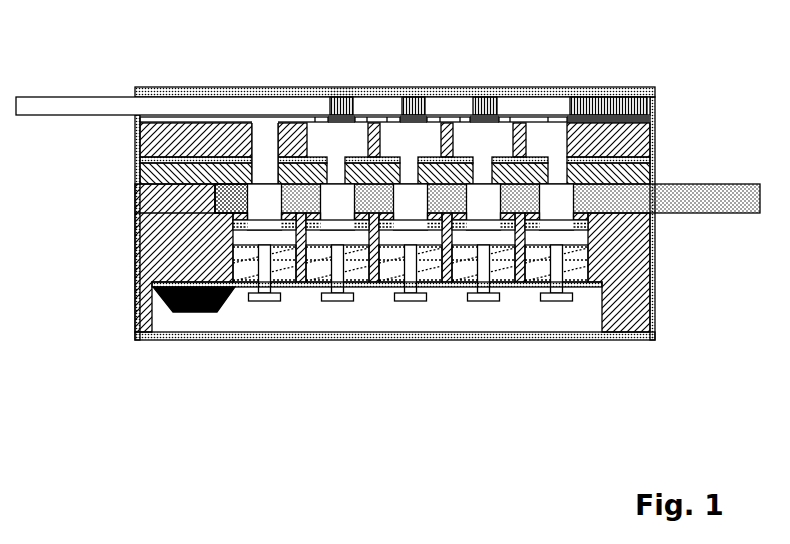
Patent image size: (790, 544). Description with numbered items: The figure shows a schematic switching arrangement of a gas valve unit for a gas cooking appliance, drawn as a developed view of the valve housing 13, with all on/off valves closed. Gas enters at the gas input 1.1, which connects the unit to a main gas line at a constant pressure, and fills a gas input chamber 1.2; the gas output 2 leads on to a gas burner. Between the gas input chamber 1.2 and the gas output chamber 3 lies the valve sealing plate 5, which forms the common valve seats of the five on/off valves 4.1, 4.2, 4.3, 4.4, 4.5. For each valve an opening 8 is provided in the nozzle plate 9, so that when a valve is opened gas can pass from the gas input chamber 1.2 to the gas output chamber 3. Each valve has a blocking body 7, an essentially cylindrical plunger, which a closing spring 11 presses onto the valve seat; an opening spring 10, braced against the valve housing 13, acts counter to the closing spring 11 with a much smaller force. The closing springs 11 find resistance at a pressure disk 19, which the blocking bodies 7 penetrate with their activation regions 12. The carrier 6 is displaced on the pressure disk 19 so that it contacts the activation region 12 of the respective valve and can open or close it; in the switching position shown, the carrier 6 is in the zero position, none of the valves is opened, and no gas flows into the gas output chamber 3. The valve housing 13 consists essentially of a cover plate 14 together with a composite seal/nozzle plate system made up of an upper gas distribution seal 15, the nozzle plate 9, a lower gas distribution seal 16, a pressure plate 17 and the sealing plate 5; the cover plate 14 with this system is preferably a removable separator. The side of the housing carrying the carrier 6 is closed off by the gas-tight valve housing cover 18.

The gas input 1.1 is at (732, 193).
The gas input chamber 1.2 is at (233, 204).
The gas output 2 is at (75, 105).
The gas output chamber 3 is at (262, 133).
The on/off valve 4.1 is at (262, 202).
The on/off valve 4.2 is at (330, 202).
The on/off valve 4.3 is at (408, 200).
The on/off valve 4.4 is at (479, 200).
The on/off valve 4.5 is at (557, 200).
The valve sealing plate 5 is at (140, 173).
The carrier 6 is at (153, 302).
The blocking body 7 is at (194, 235).
The opening 8 is at (403, 113).
The nozzle plate 9 is at (650, 118).
The opening spring 10 is at (282, 218).
The closing spring 11 is at (282, 272).
The activation region 12 is at (258, 302).
The valve housing 13 is at (623, 272).
The cover plate 14 is at (655, 92).
The upper gas distribution seal 15 is at (338, 95).
The lower gas distribution seal 16 is at (213, 133).
The pressure plate 17 is at (655, 160).
The valve housing cover 18 is at (173, 340).
The pressure disk 19 is at (577, 288).